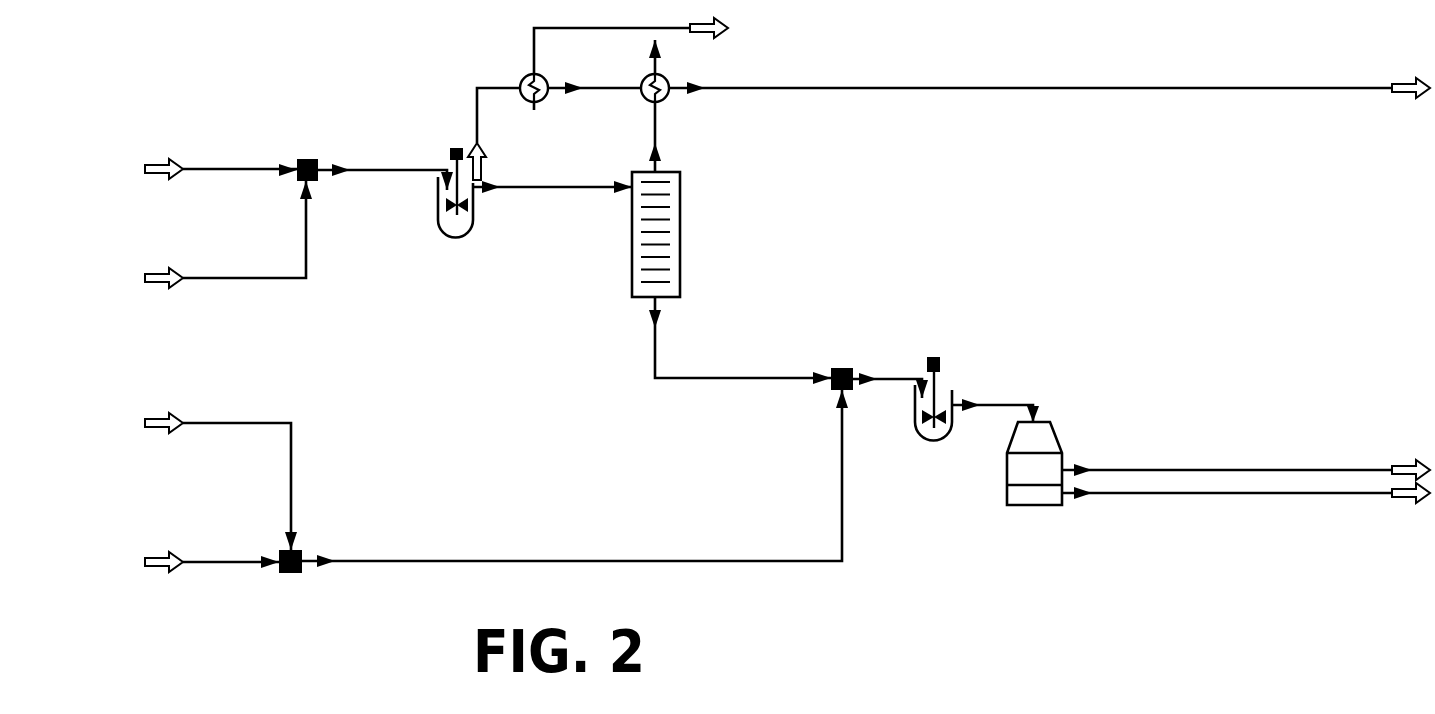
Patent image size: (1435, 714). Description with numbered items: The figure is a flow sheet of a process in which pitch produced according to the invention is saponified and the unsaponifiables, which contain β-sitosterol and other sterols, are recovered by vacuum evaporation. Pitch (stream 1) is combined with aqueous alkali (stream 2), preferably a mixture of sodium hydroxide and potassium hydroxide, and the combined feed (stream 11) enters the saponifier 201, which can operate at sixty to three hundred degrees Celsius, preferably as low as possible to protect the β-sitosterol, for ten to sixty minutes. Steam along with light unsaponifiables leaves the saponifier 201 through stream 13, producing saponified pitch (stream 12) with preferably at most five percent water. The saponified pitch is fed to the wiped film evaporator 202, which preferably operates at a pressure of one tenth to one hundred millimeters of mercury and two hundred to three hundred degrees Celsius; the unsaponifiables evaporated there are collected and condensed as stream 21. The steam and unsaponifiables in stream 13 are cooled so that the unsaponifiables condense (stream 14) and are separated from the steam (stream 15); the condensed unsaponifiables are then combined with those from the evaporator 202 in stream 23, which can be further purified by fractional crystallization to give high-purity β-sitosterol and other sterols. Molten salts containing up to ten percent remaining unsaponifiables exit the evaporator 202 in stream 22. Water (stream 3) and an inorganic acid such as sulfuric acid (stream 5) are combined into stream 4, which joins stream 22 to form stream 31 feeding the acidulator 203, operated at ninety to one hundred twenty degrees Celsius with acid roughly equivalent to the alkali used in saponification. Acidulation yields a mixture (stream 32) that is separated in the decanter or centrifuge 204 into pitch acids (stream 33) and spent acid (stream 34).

The pitch stream 1 is at (221, 193).
The aqueous alkali stream 2 is at (228, 258).
The water stream 3 is at (221, 481).
The mixed stream 4 is at (575, 478).
The inorganic acid stream 5 is at (212, 586).
The mixed feed stream to first reactor 11 is at (385, 185).
The saponified pitch stream 12 is at (552, 204).
The steam and light unsaponifiables stream 13 is at (494, 134).
The condensed unsaponifiables stream 14 is at (594, 106).
The steam stream 15 is at (631, 64).
The evaporated unsaponifiables stream 21 is at (673, 106).
The molten salts stream 22 is at (719, 340).
The combined unsaponifiables stream 23 is at (1049, 109).
The acidulator feed stream 31 is at (890, 369).
The acidulation mixture stream 32 is at (995, 394).
The pitch acids stream 33 is at (1246, 456).
The spent acid stream 34 is at (1246, 508).
The saponifier 201 is at (436, 234).
The wiped film evaporator 202 is at (614, 270).
The acidulator 203 is at (912, 441).
The decanter or centrifuge 204 is at (990, 493).